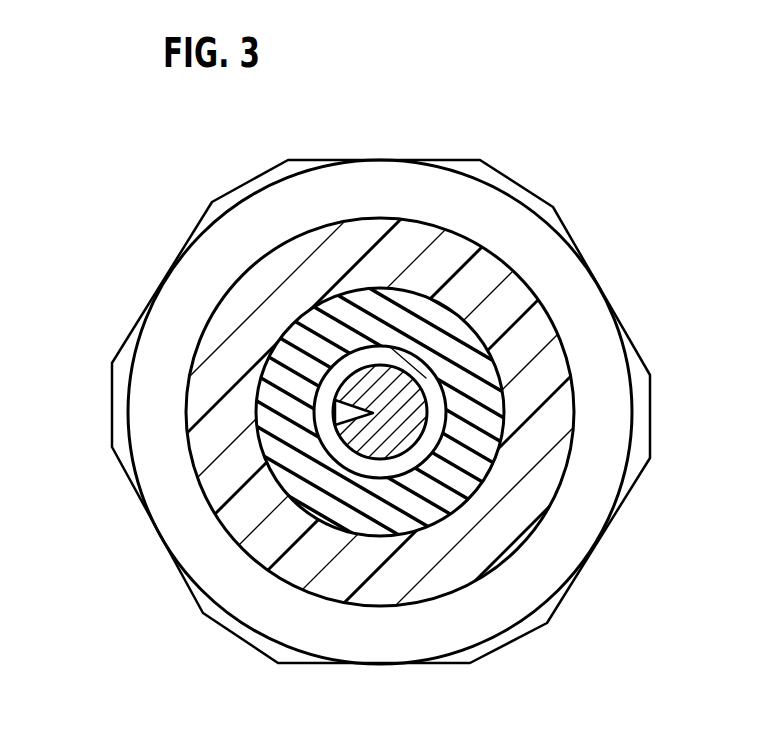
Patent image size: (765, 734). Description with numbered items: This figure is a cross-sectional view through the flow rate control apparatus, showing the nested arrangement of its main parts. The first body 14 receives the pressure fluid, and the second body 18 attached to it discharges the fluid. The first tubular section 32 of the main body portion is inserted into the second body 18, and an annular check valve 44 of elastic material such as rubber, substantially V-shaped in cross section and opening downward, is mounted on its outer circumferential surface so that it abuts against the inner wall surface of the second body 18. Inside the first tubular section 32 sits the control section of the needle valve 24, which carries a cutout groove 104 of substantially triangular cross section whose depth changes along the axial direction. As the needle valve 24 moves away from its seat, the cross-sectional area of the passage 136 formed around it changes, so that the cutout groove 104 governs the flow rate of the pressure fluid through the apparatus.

The second body 18 is at (240, 651).
The check valve 44 is at (473, 353).
The passage 136 is at (343, 450).
The needle valve 24 is at (398, 342).
The cutout groove 104 is at (348, 440).
The first tubular section 32 is at (392, 467).
The first body 14 is at (308, 421).